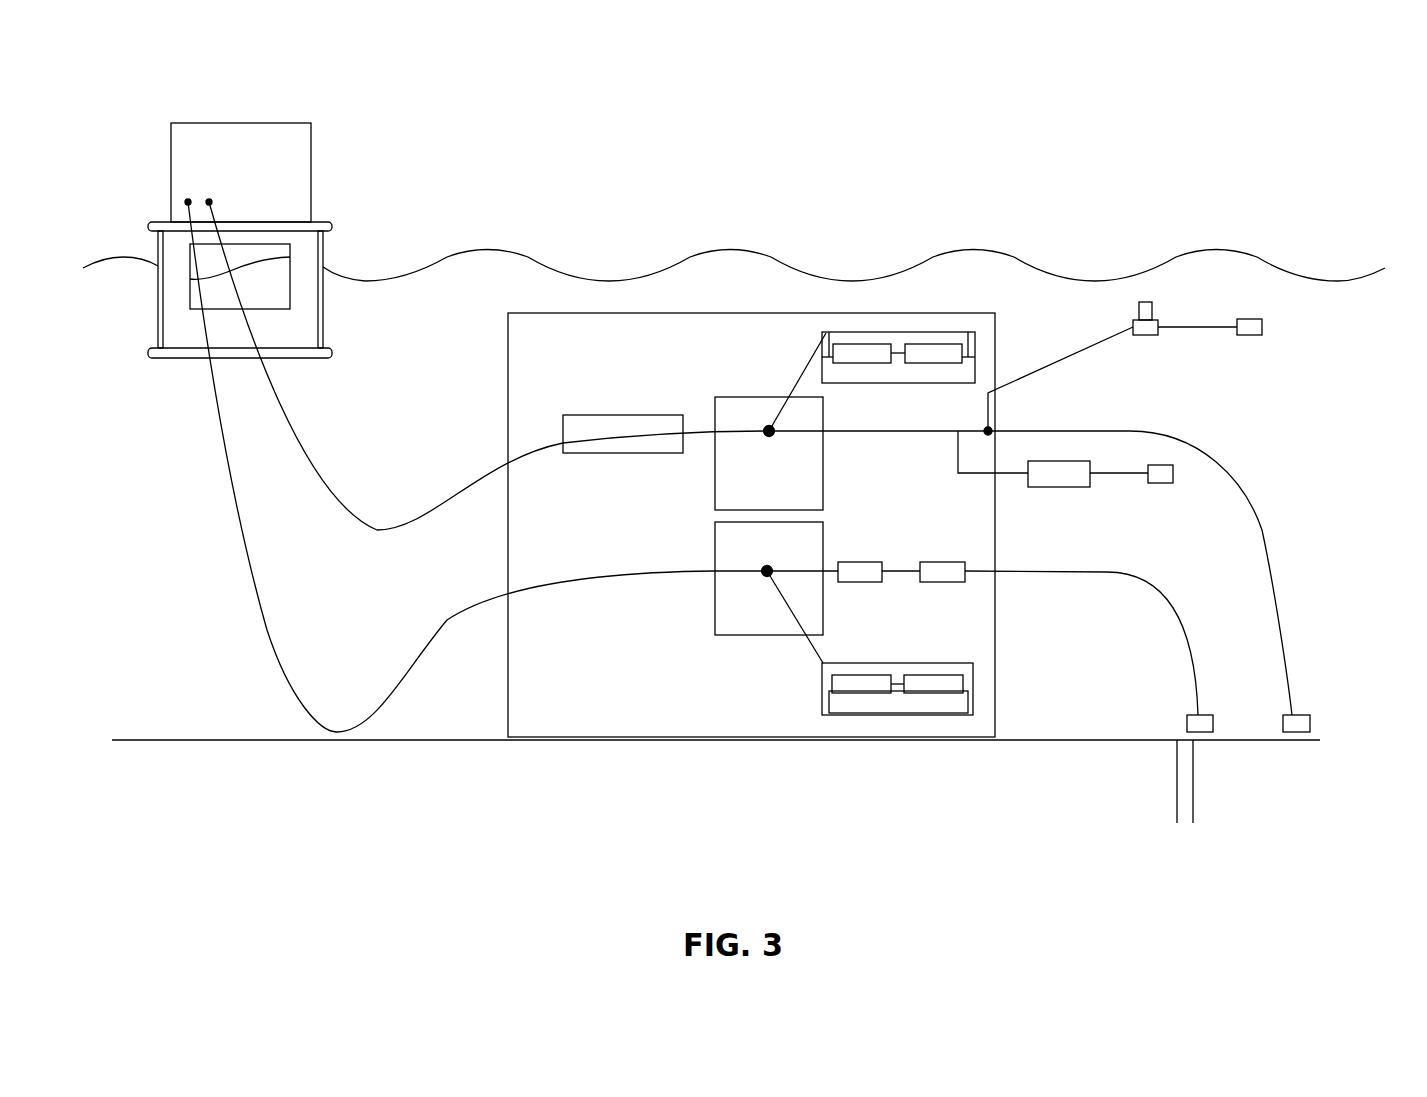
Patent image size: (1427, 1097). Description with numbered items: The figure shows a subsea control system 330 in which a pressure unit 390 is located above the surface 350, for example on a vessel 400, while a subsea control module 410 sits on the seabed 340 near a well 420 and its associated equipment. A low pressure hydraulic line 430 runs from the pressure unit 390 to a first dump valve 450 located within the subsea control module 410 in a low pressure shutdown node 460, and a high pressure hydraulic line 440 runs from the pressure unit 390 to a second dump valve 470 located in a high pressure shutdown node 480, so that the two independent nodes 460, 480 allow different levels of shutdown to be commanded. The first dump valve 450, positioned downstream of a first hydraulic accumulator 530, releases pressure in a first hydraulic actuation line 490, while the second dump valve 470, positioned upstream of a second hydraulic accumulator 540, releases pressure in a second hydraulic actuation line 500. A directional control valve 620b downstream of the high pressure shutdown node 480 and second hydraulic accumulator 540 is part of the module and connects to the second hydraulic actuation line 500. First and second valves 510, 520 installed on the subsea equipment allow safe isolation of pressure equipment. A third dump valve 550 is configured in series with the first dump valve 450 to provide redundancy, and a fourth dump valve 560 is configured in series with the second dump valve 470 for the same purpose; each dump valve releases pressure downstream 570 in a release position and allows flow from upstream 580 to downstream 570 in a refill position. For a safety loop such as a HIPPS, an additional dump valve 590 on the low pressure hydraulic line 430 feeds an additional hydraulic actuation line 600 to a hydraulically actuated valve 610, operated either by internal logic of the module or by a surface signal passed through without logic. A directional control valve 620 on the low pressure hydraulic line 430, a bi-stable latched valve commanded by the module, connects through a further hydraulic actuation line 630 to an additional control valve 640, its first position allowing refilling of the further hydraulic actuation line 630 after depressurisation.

The subsea control system 330 is at (999, 110).
The seabed 340 is at (1030, 740).
The surface 350 is at (450, 253).
The pressure unit 390 is at (311, 145).
The vessel 400 is at (332, 225).
The subsea control module 410 is at (995, 353).
The well 420 is at (1175, 775).
The low pressure hydraulic line 430 is at (313, 483).
The high pressure hydraulic line 440 is at (268, 635).
The first dump valve 450 is at (860, 345).
The low pressure shutdown node 460 is at (727, 397).
The second dump valve 470 is at (855, 675).
The high pressure shutdown node 480 is at (737, 635).
The first hydraulic actuation line 490 is at (1068, 427).
The second hydraulic actuation line 500 is at (1060, 570).
The first valve 510 is at (1300, 713).
The second valve 520 is at (1207, 713).
The first hydraulic accumulator 530 is at (613, 415).
The second hydraulic accumulator 540 is at (862, 562).
The third dump valve 550 is at (923, 345).
The fourth dump valve 560 is at (933, 675).
The downstream 570 is at (973, 333).
The upstream 580 is at (827, 333).
The additional dump valve 590 is at (1038, 487).
The additional hydraulic actuation line 600 is at (1103, 473).
The hydraulically actuated valve 610 is at (1157, 483).
The directional control valve 620 is at (1138, 303).
The directional control valve 620b is at (947, 562).
The further hydraulic actuation line 630 is at (1173, 325).
The additional control valve 640 is at (1253, 317).